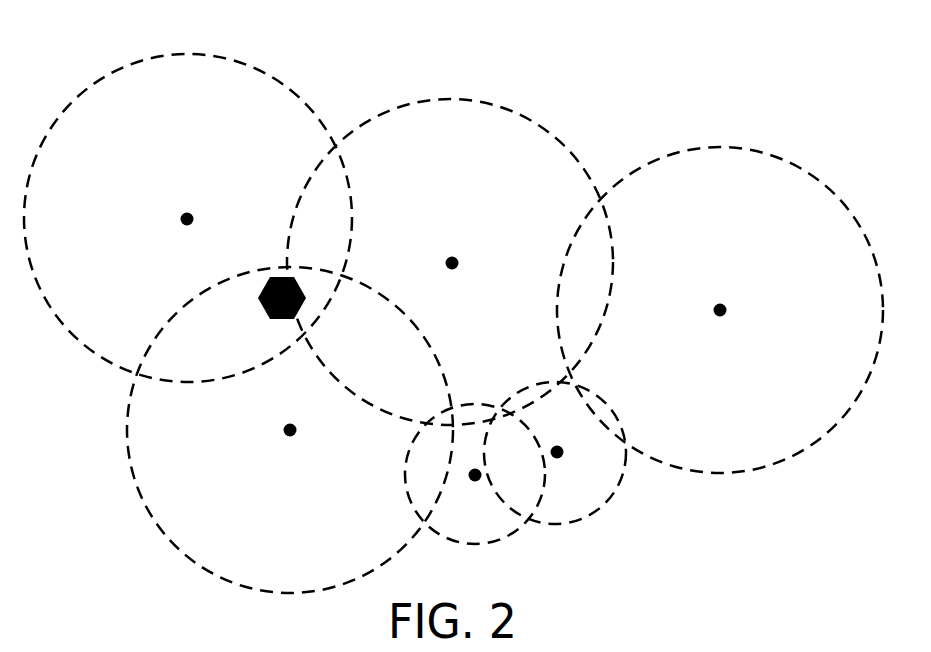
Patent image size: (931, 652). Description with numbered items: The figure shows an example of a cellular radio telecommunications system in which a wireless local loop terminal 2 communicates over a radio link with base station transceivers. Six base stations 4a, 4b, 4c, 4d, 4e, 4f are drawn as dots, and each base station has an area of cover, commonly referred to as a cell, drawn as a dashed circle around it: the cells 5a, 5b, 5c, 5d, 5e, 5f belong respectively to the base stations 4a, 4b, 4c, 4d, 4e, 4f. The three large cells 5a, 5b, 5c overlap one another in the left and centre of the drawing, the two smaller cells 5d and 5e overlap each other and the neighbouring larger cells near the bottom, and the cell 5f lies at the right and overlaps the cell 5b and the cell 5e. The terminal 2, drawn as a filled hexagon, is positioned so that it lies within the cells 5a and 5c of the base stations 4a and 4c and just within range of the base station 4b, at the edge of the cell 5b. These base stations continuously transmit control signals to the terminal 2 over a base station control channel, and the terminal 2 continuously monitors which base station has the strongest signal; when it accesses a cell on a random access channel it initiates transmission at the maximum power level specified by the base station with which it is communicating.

The terminal 2 is at (258, 302).
The base station 4a is at (187, 216).
The base station 4b is at (455, 261).
The base station 4c is at (294, 433).
The base station 4d is at (472, 479).
The base station 4e is at (561, 455).
The base station 4f is at (724, 307).
The cell 5a is at (290, 84).
The cell 5b is at (552, 128).
The cell 5c is at (163, 537).
The cell 5d is at (503, 541).
The cell 5e is at (617, 494).
The cell 5f is at (817, 172).